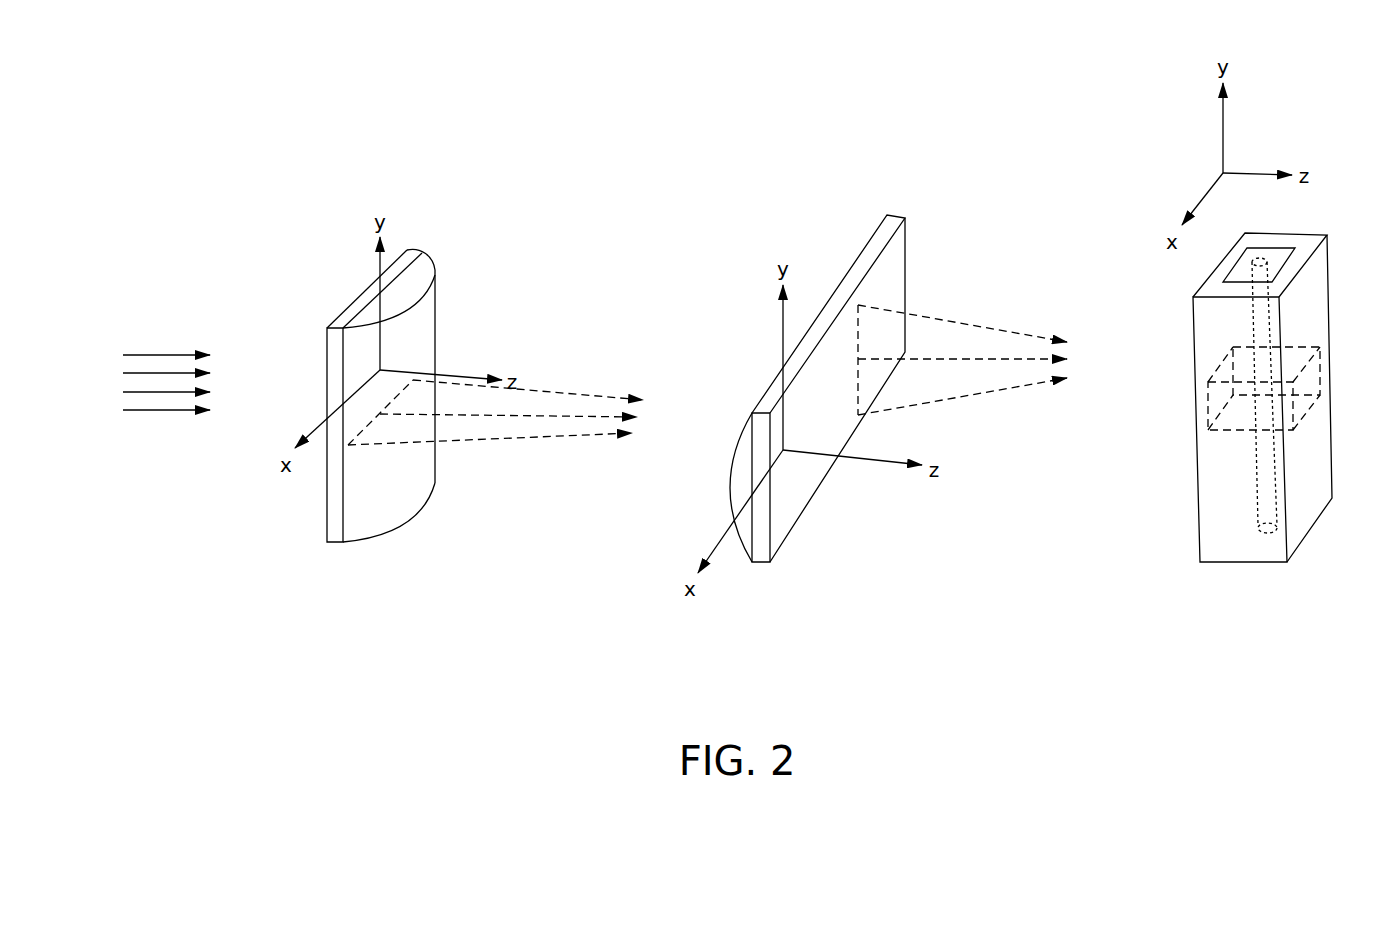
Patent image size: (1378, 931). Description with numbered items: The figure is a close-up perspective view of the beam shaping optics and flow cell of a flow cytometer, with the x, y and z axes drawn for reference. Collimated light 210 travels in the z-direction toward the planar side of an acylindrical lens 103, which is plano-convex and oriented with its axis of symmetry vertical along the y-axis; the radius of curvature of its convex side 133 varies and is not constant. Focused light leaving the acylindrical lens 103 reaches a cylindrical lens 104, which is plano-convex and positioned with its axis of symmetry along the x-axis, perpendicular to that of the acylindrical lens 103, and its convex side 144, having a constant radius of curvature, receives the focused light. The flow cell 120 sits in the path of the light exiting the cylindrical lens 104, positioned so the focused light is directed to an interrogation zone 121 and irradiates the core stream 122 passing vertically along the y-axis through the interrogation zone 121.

The collimated light 210 is at (158, 418).
The acylindrical lens 103 is at (410, 518).
The convex side of acylindrical lens 133 is at (418, 300).
The cylindrical lens 104 is at (760, 563).
The convex side of cylindrical lens 144 is at (728, 475).
The flow cell 120 is at (1200, 534).
The core stream 122 is at (1258, 262).
The interrogation zone 121 is at (1207, 412).